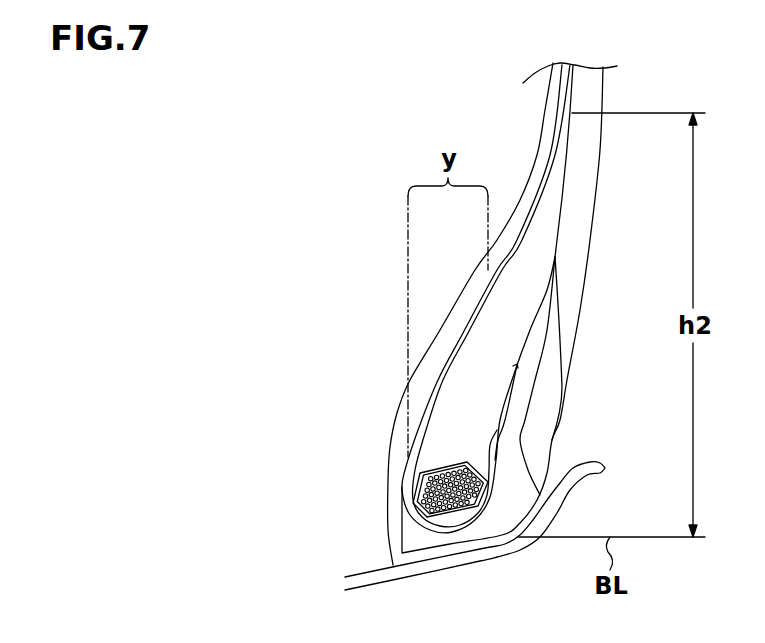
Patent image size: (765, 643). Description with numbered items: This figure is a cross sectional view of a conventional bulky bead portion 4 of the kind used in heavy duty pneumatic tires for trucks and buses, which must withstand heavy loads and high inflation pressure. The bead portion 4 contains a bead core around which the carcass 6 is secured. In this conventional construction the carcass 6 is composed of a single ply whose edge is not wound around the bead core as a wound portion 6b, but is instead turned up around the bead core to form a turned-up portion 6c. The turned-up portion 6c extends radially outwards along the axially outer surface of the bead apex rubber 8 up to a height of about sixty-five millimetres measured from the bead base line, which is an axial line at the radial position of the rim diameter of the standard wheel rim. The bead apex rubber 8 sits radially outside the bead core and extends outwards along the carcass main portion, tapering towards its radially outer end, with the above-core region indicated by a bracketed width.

The bead portion 4 is at (370, 468).
The carcass 6 is at (560, 93).
The wound portion 6b is at (437, 378).
The turned-up portion 6c is at (517, 377).
The bead apex rubber 8 is at (485, 334).